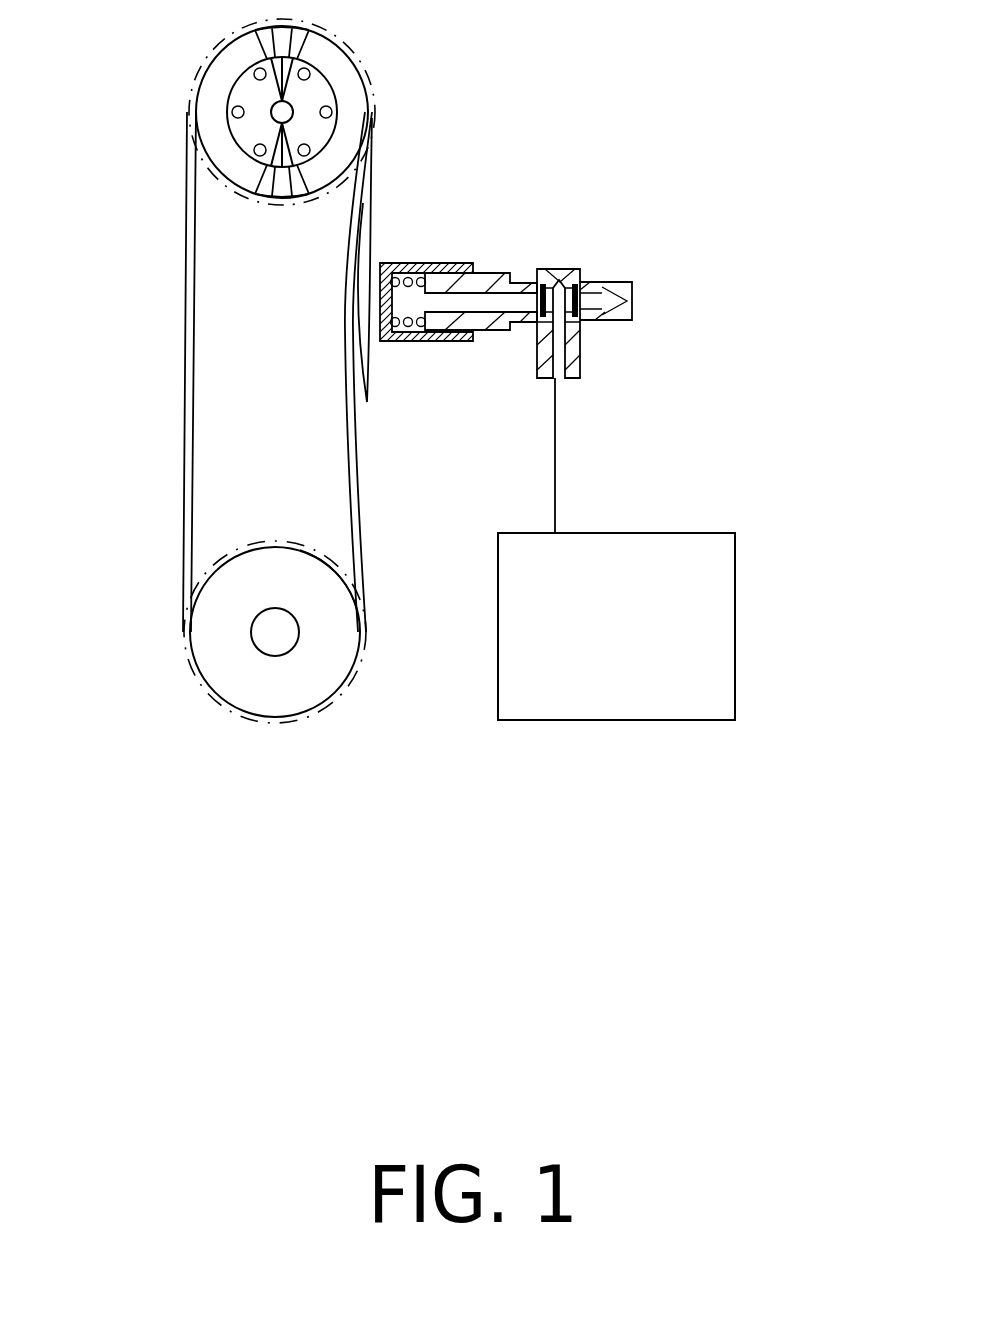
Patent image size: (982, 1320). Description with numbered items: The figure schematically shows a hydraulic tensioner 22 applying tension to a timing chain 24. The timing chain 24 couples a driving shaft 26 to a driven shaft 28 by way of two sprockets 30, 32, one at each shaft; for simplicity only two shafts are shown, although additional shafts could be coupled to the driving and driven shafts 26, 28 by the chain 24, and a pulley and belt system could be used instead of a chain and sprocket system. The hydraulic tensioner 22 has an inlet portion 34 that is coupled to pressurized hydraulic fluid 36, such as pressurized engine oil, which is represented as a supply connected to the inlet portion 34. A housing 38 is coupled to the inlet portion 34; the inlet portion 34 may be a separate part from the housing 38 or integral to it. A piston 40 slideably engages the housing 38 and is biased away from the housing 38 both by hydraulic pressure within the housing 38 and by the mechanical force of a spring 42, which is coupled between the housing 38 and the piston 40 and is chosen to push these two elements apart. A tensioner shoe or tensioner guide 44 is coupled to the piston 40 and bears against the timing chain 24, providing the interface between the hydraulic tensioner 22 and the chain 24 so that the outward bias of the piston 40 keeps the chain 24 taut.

The hydraulic tensioner 22 is at (566, 219).
The timing chain 24 is at (367, 568).
The driving shaft 26 is at (281, 630).
The driven shaft 28 is at (284, 110).
The sprocket 30 is at (214, 640).
The sprocket 32 is at (207, 111).
The inlet portion 34 is at (559, 384).
The pressurized hydraulic fluid 36 is at (737, 633).
The housing 38 is at (495, 273).
The piston 40 is at (402, 265).
The spring 42 is at (392, 325).
The tensioner shoe 44 is at (365, 242).